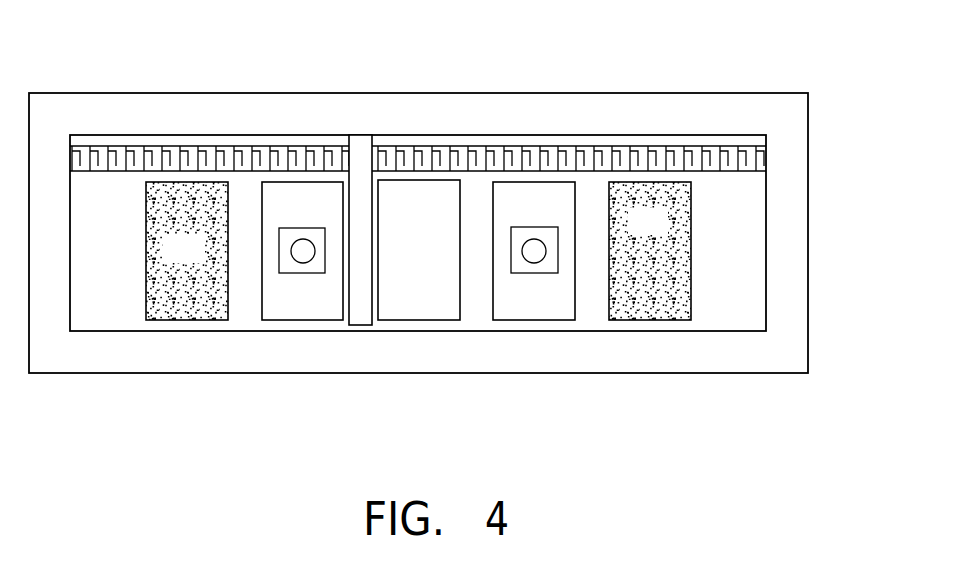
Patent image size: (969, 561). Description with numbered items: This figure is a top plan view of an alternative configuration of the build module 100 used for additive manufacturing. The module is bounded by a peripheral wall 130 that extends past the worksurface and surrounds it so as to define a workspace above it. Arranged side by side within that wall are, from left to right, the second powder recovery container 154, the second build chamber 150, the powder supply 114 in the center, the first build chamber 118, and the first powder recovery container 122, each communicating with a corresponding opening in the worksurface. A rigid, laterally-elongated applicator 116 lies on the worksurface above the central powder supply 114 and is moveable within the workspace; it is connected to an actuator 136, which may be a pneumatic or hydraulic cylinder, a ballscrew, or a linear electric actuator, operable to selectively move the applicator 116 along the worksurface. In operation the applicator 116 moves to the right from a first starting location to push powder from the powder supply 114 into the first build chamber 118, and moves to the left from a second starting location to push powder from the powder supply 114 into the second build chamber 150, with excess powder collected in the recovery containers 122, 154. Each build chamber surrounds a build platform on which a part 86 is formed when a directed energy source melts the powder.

The build module 100 is at (600, 85).
The peripheral wall 130 is at (429, 120).
The actuator 136 is at (658, 152).
The applicator 116 is at (361, 145).
The second powder recovery container 154 is at (295, 209).
The second build chamber 150 is at (322, 306).
The powder supply 114 is at (482, 173).
The first build chamber 118 is at (552, 310).
The first powder recovery container 122 is at (714, 216).
The part 86 is at (300, 239).